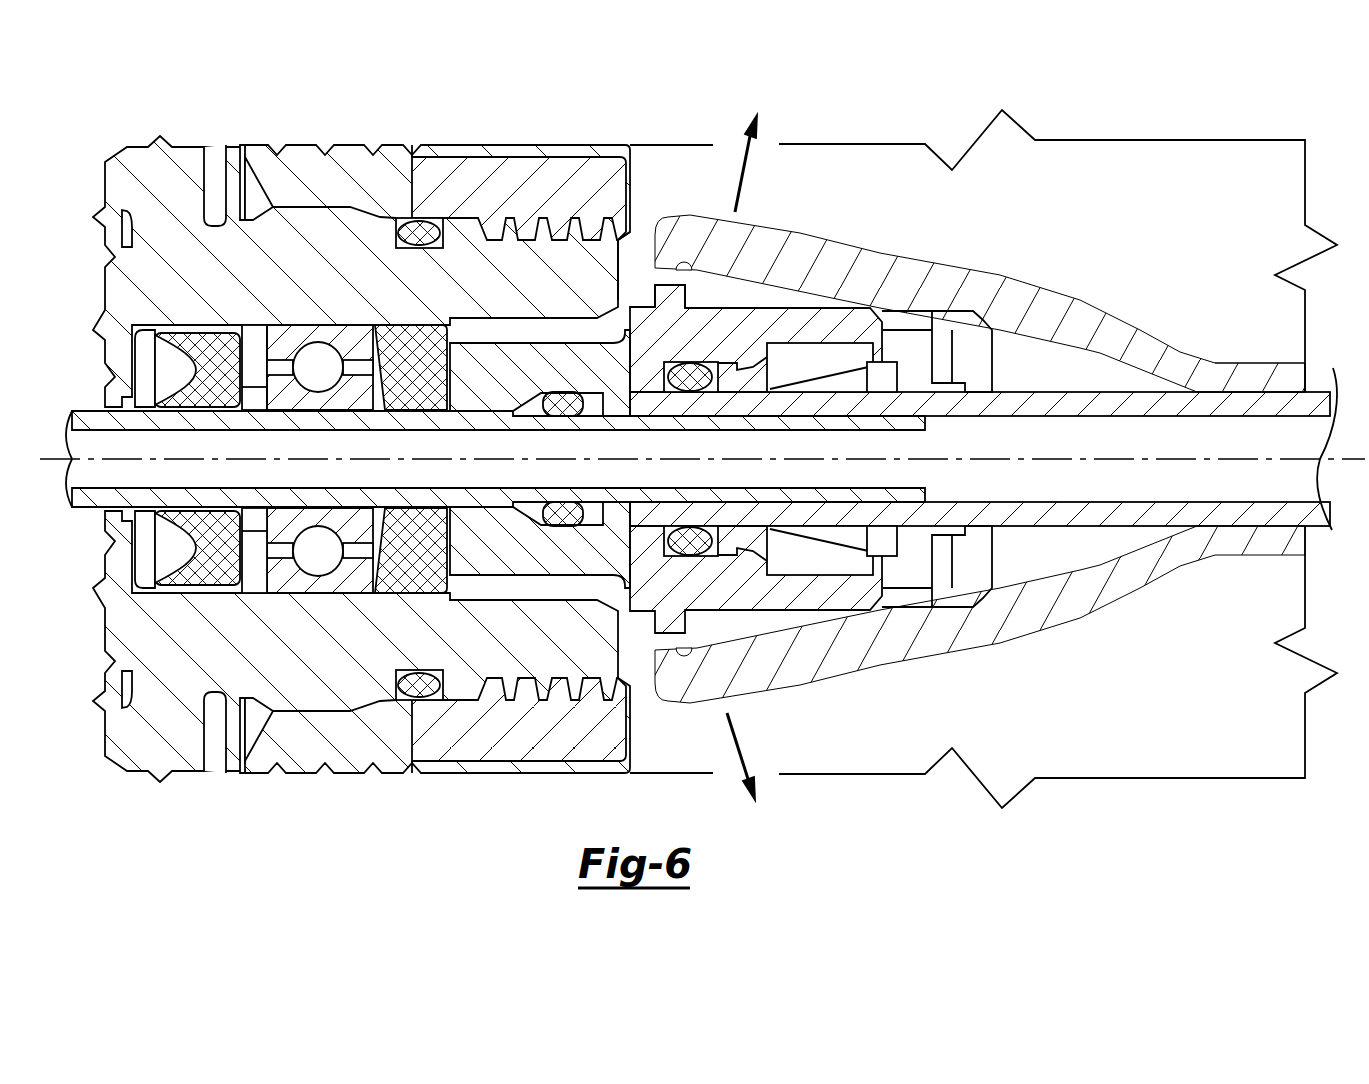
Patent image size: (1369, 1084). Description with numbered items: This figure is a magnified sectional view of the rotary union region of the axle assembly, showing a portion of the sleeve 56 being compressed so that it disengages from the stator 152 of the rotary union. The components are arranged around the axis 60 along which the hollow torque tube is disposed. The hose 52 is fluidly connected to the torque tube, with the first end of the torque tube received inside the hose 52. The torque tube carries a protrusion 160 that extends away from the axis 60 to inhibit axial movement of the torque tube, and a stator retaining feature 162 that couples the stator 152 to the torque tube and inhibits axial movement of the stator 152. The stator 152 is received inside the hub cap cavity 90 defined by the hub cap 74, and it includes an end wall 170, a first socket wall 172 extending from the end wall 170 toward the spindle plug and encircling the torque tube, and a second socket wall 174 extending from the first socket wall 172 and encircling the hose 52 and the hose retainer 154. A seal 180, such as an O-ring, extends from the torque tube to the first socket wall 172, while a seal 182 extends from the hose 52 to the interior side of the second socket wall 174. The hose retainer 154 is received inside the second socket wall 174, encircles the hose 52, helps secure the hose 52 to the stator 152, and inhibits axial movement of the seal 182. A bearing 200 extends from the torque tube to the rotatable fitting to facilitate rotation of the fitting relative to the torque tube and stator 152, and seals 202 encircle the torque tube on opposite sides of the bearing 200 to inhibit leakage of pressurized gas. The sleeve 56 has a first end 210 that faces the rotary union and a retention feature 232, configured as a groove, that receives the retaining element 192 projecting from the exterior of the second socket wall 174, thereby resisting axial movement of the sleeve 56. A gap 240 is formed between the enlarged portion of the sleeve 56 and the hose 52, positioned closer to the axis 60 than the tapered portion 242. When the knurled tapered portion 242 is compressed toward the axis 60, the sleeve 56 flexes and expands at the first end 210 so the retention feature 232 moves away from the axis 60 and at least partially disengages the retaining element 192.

The hose 52 is at (1320, 392).
The sleeve 56 is at (1265, 362).
The axis 60 is at (1218, 459).
The hub cap 74 is at (406, 186).
The hub cap cavity 90 is at (1063, 711).
The stator 152 is at (788, 308).
The hose retainer 154 is at (943, 343).
The protrusion 160 is at (252, 530).
The stator retaining feature 162 is at (473, 507).
The end wall 170 is at (447, 377).
The first socket wall 172 is at (550, 343).
The second socket wall 174 is at (793, 612).
The seal 180 is at (557, 527).
The seal 182 is at (688, 555).
The retaining element 192 is at (678, 287).
The bearing 200 is at (350, 323).
The seals 202 is at (197, 333).
The first end 210 is at (648, 245).
The retention feature 232 is at (686, 250).
The gap 240 is at (1033, 376).
The tapered portion 242 is at (1123, 598).